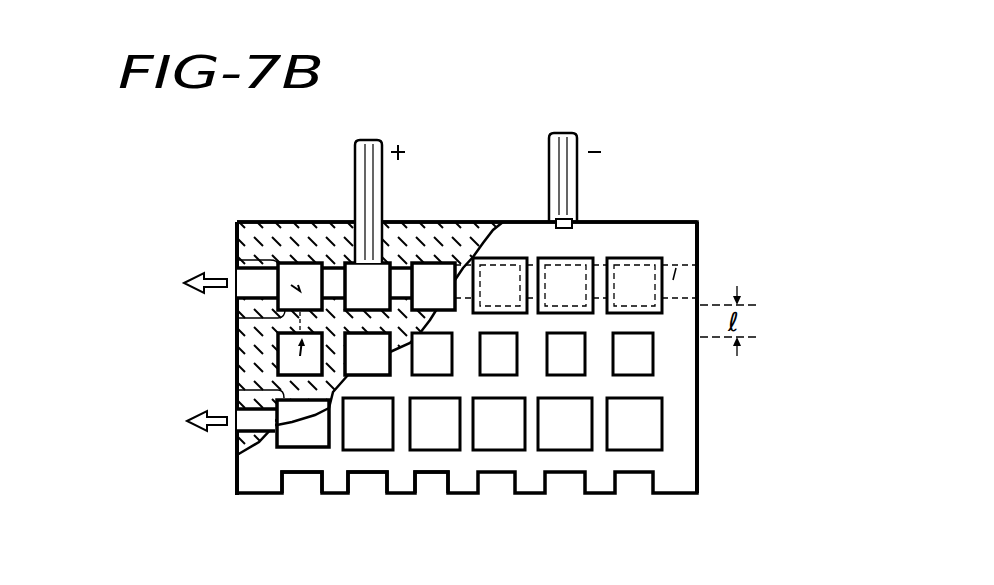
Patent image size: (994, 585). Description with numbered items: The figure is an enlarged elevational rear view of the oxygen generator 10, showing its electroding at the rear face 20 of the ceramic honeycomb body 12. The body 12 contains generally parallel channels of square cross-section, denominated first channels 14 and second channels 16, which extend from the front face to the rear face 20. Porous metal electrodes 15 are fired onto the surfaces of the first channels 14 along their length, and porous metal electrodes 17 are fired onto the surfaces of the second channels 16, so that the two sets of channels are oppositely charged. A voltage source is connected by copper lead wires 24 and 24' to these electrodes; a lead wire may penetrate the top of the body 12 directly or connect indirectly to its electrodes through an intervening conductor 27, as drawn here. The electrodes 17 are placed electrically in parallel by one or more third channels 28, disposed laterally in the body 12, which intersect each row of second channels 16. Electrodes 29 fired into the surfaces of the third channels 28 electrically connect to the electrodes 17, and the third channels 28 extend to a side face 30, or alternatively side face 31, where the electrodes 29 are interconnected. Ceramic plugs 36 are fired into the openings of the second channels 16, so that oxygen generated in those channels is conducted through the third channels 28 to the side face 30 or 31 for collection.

The oxygen generator 10 is at (732, 180).
The ceramic honeycomb body 12 is at (260, 219).
The first channels 14 is at (643, 352).
The porous metal electrodes 15 is at (240, 360).
The second channels 16 is at (567, 263).
The porous metal electrodes 17 is at (237, 319).
The rear face 20 is at (668, 389).
The copper lead wire 24 is at (600, 164).
The copper lead wire 24' is at (415, 185).
The intervening conductor 27 is at (552, 225).
The third channels 28 is at (237, 273).
The electrodes of third channels 29 is at (258, 265).
The side face 30 is at (237, 223).
The side face 31 is at (697, 233).
The ceramic plugs 36 is at (433, 453).